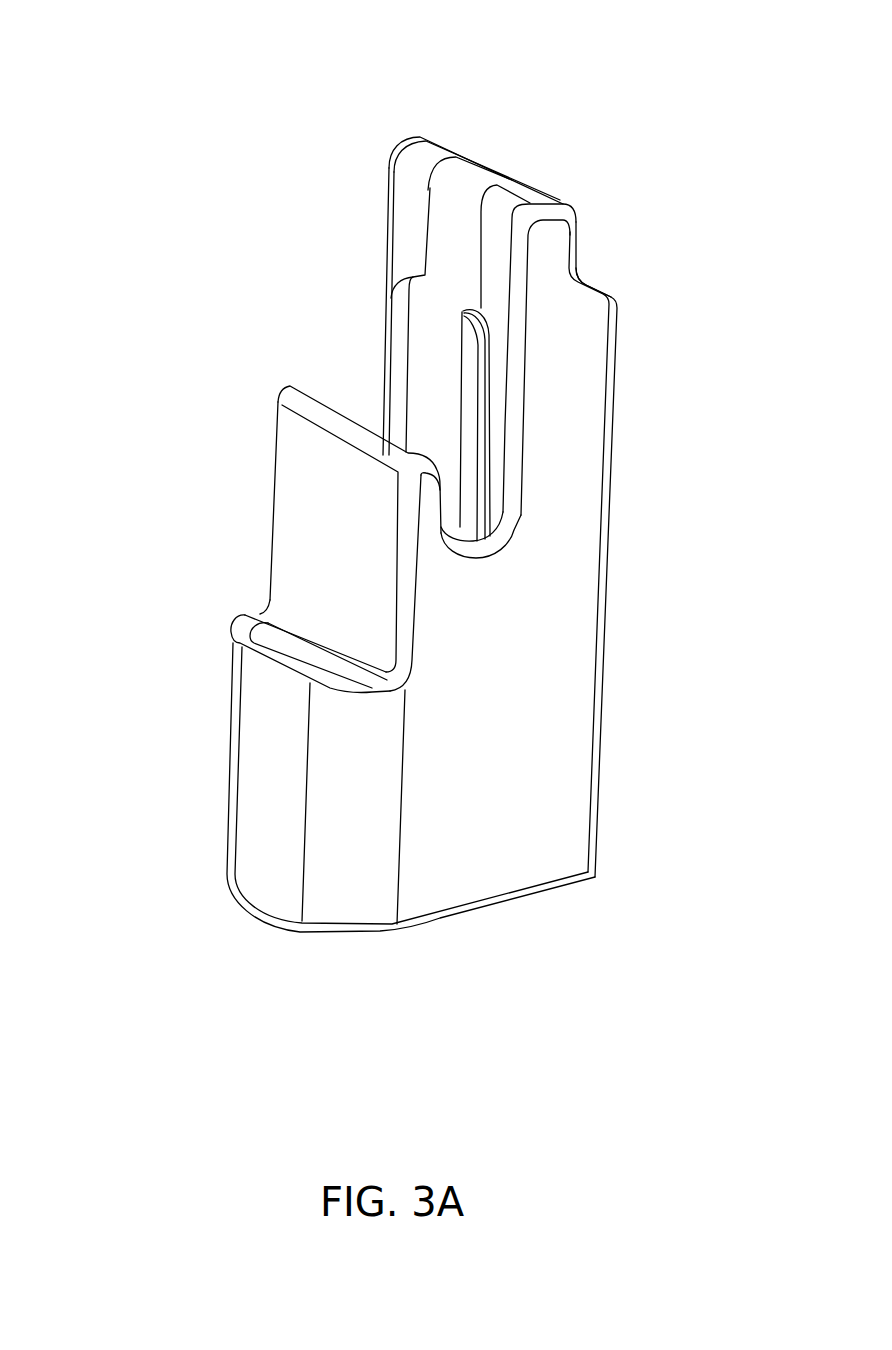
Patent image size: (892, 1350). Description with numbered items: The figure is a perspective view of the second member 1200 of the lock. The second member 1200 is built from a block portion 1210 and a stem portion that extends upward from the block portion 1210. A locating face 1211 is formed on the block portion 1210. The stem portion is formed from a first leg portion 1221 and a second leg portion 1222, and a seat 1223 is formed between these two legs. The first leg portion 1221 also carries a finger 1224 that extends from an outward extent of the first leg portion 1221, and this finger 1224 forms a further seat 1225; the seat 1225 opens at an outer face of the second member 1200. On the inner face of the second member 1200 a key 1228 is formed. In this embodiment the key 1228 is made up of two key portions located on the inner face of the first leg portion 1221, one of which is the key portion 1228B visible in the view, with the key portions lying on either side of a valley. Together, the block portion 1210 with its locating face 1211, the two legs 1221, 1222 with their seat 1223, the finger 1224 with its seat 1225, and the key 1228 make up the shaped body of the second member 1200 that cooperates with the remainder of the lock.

The second member 1200 is at (221, 372).
The block portion 1210 is at (335, 903).
The locating face 1211 is at (265, 633).
The first leg portion 1221 is at (577, 383).
The second leg portion 1222 is at (428, 497).
The seat 1223 is at (506, 538).
The finger 1224 is at (553, 232).
The seat 1225 is at (587, 283).
The key 1228 is at (437, 262).
The key portion 1228B is at (405, 315).